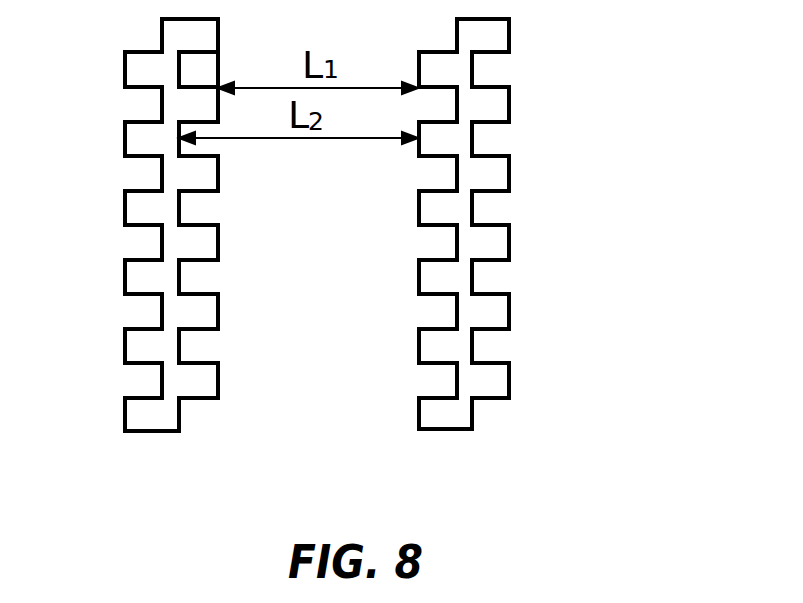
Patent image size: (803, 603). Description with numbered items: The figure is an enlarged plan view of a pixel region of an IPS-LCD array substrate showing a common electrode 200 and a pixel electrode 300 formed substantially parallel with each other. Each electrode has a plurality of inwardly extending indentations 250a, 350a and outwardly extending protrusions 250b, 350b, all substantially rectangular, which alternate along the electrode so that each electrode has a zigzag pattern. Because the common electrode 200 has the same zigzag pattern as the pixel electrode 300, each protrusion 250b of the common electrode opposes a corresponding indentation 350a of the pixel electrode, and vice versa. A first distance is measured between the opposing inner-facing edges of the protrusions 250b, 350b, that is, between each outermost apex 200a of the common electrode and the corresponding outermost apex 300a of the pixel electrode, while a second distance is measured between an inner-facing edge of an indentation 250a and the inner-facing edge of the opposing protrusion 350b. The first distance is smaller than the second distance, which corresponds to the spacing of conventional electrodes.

The common electrode 200 is at (168, 425).
The outermost apex of the common electrode 200a is at (218, 86).
The indentation of the common electrode 250a is at (205, 348).
The protrusion of the common electrode 250b is at (222, 306).
The pixel electrode 300 is at (453, 423).
The outermost apex of the pixel electrode 300a is at (420, 86).
The indentation of the pixel electrode 350a is at (420, 245).
The protrusion of the pixel electrode 350b is at (505, 238).